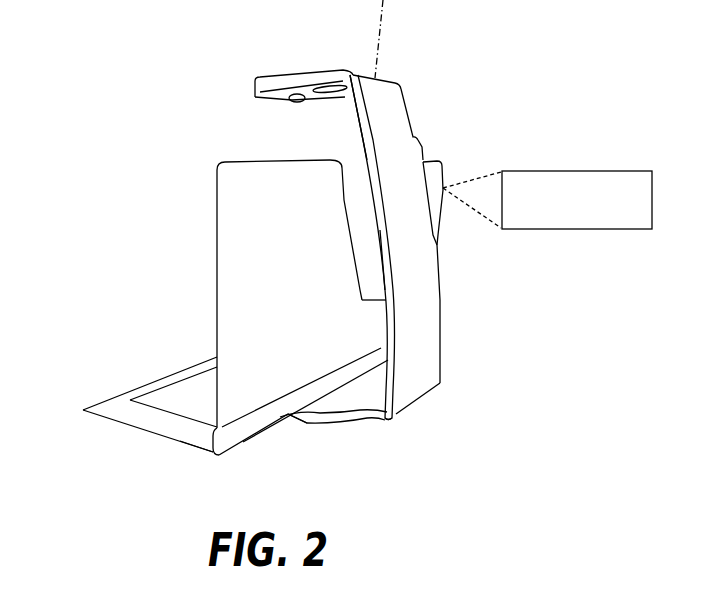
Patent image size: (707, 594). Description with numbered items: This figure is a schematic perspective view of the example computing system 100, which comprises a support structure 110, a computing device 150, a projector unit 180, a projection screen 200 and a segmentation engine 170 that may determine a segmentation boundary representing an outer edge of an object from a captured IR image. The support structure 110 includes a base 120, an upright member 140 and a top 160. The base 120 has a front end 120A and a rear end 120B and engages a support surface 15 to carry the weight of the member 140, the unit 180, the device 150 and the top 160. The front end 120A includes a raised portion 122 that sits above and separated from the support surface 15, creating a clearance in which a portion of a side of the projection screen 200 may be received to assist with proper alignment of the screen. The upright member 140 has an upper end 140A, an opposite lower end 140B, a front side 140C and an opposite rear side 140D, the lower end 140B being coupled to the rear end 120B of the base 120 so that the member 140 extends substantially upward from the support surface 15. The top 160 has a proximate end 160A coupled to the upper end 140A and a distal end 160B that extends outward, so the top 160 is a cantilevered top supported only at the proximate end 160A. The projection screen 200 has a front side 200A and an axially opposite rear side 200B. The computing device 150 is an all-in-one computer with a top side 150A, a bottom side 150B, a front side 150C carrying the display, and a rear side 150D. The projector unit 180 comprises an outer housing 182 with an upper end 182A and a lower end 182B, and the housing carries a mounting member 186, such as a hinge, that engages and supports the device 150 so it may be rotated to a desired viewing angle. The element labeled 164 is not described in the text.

The support surface 15 is at (68, 455).
The computing system 100 is at (97, 170).
The support structure 110 is at (481, 163).
The base 120 is at (340, 430).
The front end 120A is at (332, 380).
The rear end 120B is at (386, 424).
The raised portion 122 is at (301, 423).
The upright member 140 is at (418, 338).
The upper end 140A is at (411, 66).
The lower end 140B is at (413, 406).
The front side 140C is at (353, 115).
The rear side 140D is at (424, 147).
The computing device 150 is at (216, 179).
The top side 150A is at (278, 159).
The bottom side 150B is at (215, 449).
The front side 150C is at (215, 267).
The rear side 150D is at (293, 240).
The top 160 is at (332, 62).
The proximate end 160A is at (401, 86).
The distal end 160B is at (252, 93).
The headrest opening 164 is at (290, 100).
The segmentation engine 170 is at (577, 230).
The projector unit 180 is at (390, 237).
The outer housing 182 is at (373, 270).
The upper end 182A is at (370, 128).
The lower end 182B is at (372, 303).
The mounting member 186 is at (341, 183).
The projection screen 200 is at (113, 402).
The front side 200A is at (147, 387).
The rear side 200B is at (245, 458).